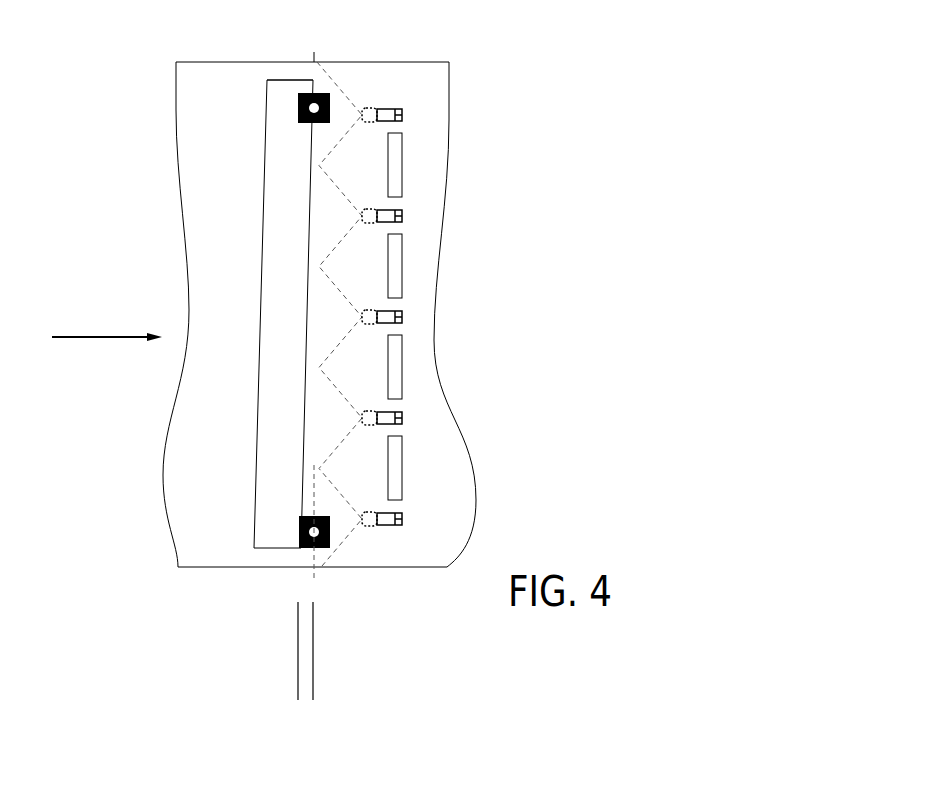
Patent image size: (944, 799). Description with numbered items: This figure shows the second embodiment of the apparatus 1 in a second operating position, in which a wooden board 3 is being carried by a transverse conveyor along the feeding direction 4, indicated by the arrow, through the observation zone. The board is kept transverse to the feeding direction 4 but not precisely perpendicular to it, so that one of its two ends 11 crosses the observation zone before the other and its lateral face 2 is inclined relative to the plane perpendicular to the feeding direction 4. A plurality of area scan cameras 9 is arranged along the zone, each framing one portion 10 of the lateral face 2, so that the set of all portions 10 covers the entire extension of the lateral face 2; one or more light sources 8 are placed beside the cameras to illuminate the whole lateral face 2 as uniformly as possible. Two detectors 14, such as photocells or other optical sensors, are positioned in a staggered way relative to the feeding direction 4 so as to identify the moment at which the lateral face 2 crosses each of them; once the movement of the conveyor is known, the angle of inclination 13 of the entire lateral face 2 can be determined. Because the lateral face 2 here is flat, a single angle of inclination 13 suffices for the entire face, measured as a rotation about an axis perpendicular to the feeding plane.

The apparatus 1 is at (505, 80).
The lateral face 2 is at (306, 318).
The wooden board 3 is at (272, 432).
The feeding direction 4 is at (108, 337).
The light source 8 is at (402, 167).
The area scan camera 9 is at (402, 115).
The portion 10 is at (336, 495).
The end 11 is at (194, 121).
The angle of inclination 13 is at (367, 650).
The detector 14 is at (314, 123).